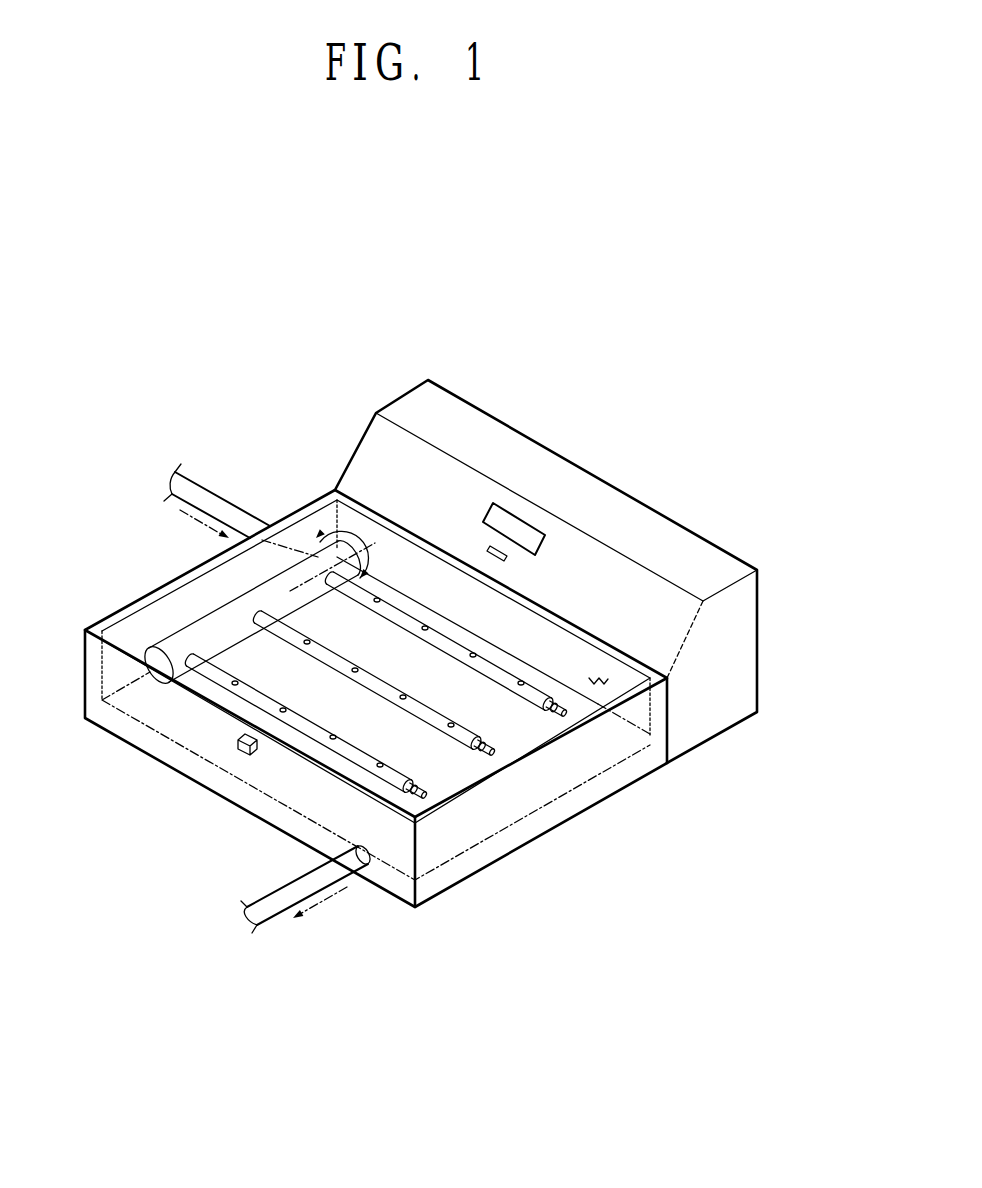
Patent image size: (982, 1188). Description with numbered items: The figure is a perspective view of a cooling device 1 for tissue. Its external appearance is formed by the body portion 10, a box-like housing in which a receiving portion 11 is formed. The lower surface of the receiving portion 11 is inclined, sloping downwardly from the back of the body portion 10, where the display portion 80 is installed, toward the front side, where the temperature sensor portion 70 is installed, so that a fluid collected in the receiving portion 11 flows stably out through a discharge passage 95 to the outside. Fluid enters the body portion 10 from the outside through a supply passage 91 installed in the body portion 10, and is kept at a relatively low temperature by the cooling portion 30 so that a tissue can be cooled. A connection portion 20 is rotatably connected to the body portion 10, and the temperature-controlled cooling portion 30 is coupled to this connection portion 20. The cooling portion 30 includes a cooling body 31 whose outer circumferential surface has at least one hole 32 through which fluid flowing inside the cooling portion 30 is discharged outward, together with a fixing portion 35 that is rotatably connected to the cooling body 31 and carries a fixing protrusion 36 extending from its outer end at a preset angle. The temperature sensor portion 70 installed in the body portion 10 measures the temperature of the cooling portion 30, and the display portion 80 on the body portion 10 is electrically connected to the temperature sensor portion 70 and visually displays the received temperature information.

The cooling device for tissue 1 is at (688, 398).
The body portion 10 is at (134, 747).
The receiving portion 11 is at (600, 675).
The connection portion 20 is at (197, 637).
The cooling portion 30 is at (432, 746).
The cooling body 31 is at (462, 742).
The hole 32 is at (330, 740).
The fixing portion 35 is at (486, 745).
The fixing protrusion 36 is at (427, 789).
The temperature sensor portion 70 is at (240, 750).
The display portion 80 is at (512, 527).
The supply passage 91 is at (230, 502).
The discharge passage 95 is at (276, 908).